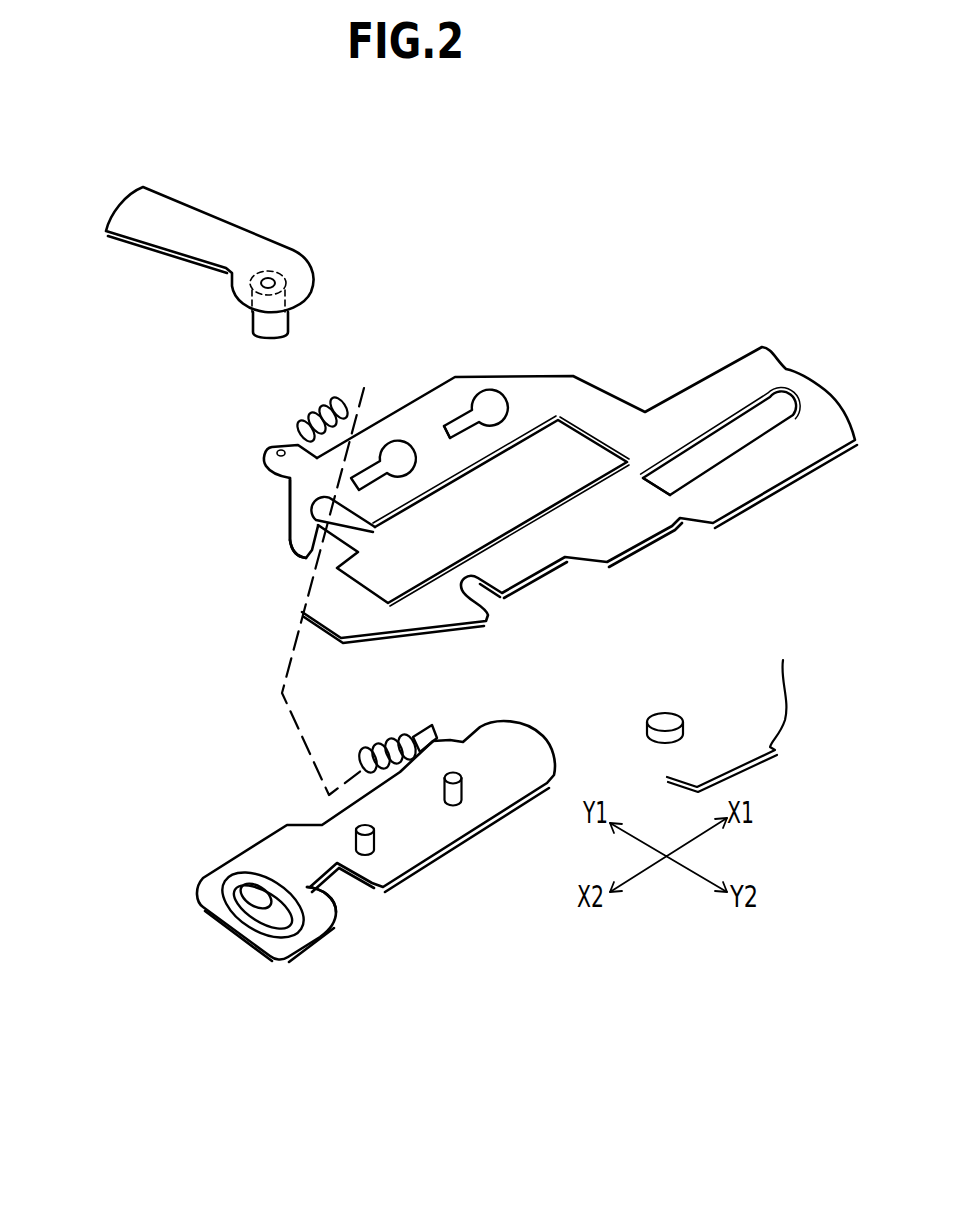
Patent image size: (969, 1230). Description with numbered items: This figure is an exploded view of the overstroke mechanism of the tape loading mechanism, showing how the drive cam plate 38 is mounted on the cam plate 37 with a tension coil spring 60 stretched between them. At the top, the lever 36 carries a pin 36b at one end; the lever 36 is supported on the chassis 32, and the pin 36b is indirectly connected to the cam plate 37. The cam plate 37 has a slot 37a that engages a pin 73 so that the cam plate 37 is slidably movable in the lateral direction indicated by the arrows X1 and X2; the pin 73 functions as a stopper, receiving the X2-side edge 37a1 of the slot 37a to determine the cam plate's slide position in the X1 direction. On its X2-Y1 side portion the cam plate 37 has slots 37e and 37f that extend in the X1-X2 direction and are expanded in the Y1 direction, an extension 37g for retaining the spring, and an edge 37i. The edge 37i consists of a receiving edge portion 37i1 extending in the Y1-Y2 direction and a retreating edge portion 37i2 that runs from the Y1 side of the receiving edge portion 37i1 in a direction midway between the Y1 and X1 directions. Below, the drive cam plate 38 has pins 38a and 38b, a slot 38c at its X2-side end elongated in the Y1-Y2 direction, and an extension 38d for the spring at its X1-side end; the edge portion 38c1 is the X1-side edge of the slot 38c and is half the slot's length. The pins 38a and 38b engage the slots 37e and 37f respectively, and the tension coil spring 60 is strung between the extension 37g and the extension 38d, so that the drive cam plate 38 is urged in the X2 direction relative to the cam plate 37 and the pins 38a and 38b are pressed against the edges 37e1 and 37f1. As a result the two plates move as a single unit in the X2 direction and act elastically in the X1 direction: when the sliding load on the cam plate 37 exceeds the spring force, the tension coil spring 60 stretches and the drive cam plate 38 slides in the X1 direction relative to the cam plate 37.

The lever 36 is at (200, 207).
The pin 36b is at (250, 323).
The tension coil spring 60 is at (315, 405).
The cam plate 37 is at (702, 368).
The slot 37a is at (740, 440).
The X2-side edge 37a1 is at (657, 493).
The slot 37e is at (367, 458).
The edge 37e1 is at (372, 534).
The slot 37f is at (458, 418).
The edge 37f1 is at (449, 440).
The extension 37g is at (267, 452).
The edge 37i is at (120, 530).
The receiving edge portion 37i1 is at (298, 560).
The retreating edge portion 37i2 is at (290, 523).
The drive cam plate 38 is at (543, 737).
The pin 38a is at (377, 840).
The pin 38b is at (462, 790).
The slot 38c is at (277, 913).
The edge portion 38c1 is at (323, 888).
The extension 38d is at (442, 740).
The pin 73 is at (677, 712).
The chassis 32 is at (777, 693).